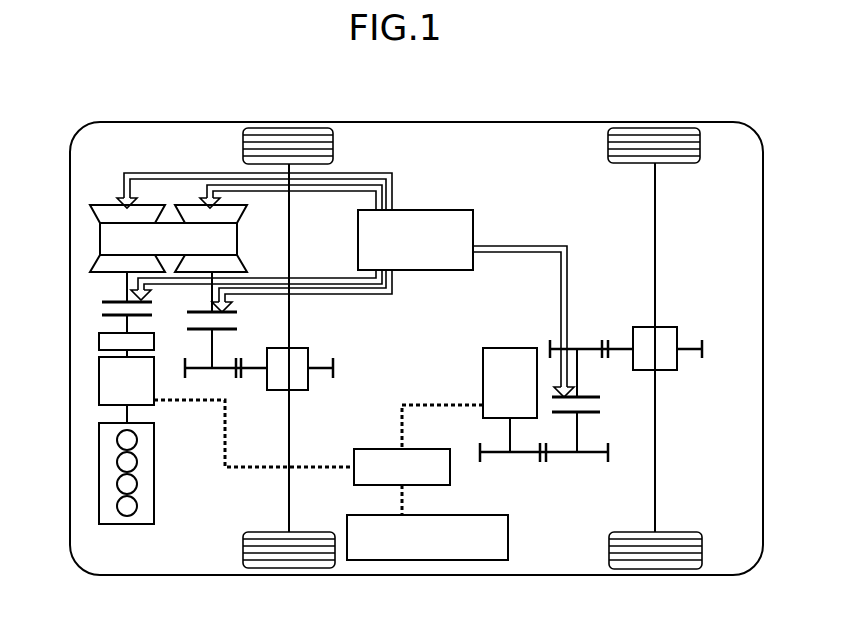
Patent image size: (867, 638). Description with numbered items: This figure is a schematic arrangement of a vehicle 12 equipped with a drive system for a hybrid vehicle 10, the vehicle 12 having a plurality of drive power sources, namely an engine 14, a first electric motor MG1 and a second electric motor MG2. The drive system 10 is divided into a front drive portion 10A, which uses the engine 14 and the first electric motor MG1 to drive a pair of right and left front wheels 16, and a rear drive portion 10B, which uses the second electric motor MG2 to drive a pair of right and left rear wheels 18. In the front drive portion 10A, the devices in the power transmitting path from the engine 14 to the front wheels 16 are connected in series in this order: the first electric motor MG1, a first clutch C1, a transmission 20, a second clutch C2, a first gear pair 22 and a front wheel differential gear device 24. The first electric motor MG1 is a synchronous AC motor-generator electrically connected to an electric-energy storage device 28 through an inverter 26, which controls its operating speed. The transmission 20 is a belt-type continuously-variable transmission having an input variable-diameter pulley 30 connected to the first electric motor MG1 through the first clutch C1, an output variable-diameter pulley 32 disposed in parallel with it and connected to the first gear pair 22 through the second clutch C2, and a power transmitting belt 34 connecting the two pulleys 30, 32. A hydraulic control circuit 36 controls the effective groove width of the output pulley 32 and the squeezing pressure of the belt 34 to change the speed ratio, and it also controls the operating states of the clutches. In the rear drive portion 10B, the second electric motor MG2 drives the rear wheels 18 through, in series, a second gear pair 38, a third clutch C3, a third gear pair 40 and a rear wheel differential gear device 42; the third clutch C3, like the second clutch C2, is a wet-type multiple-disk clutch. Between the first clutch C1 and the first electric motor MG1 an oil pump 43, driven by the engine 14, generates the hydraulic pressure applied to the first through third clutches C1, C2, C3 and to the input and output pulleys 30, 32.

The drive system for a hybrid vehicle 10 is at (458, 136).
The front drive portion 10A is at (200, 494).
The rear drive portion 10B is at (513, 333).
The vehicle 12 is at (89, 107).
The engine 14 is at (110, 524).
The front wheels 16 is at (305, 138).
The rear wheels 18 is at (667, 138).
The transmission 20 is at (153, 220).
The first gear pair 22 is at (240, 381).
The front wheel differential gear device 24 is at (308, 350).
The inverter 26 is at (430, 450).
The electric-energy storage device 28 is at (495, 516).
The input variable-diameter pulley 30 is at (106, 212).
The output variable-diameter pulley 32 is at (236, 212).
The power transmitting belt 34 is at (230, 241).
The hydraulic control circuit 36 is at (470, 212).
The second gear pair 38 is at (542, 466).
The third gear pair 40 is at (605, 336).
The rear wheel differential gear device 42 is at (670, 332).
The oil pump 43 is at (150, 335).
The first clutch C1 is at (112, 312).
The second clutch C2 is at (224, 322).
The third clutch C3 is at (589, 405).
The first electric motor MG1 is at (126, 381).
The second electric motor MG2 is at (510, 383).